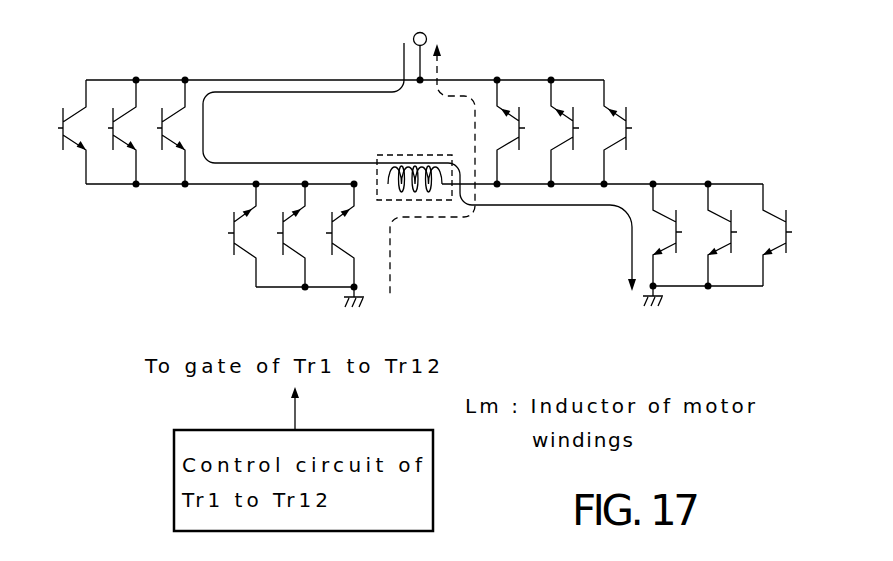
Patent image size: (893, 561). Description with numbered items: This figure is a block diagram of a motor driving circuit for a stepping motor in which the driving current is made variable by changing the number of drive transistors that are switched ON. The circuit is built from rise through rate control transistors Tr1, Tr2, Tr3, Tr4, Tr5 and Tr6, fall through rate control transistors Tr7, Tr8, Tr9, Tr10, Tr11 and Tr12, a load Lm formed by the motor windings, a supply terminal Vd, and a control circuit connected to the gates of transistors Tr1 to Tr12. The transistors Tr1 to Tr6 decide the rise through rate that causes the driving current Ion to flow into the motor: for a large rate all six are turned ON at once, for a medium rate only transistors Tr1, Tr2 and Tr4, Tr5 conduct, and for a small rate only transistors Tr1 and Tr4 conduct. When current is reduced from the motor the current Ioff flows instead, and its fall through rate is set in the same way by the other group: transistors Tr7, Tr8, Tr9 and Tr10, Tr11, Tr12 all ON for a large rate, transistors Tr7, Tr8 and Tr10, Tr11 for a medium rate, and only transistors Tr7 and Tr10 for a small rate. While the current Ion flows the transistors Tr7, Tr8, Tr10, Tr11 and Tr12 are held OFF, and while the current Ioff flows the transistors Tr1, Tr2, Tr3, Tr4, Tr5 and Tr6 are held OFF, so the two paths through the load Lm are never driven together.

The rise through rate control transistor Tr1 is at (176, 118).
The rise through rate control transistor Tr2 is at (125, 118).
The rise through rate control transistor Tr3 is at (69, 118).
The rise through rate control transistor Tr4 is at (669, 262).
The rise through rate control transistor Tr5 is at (725, 262).
The rise through rate control transistor Tr6 is at (781, 262).
The fall through rate control transistor Tr7 is at (501, 117).
The fall through rate control transistor Tr8 is at (555, 117).
The fall through rate control transistor Tr9 is at (609, 117).
The fall through rate control transistor Tr10 is at (331, 263).
The fall through rate control transistor Tr11 is at (271, 263).
The fall through rate control transistor Tr12 is at (213, 263).
The DC supply voltage Vd is at (420, 45).
The load of motor windings Lm is at (409, 191).
The driving current Ion is at (419, 167).
The current when reduced from the motor Ioff is at (432, 171).